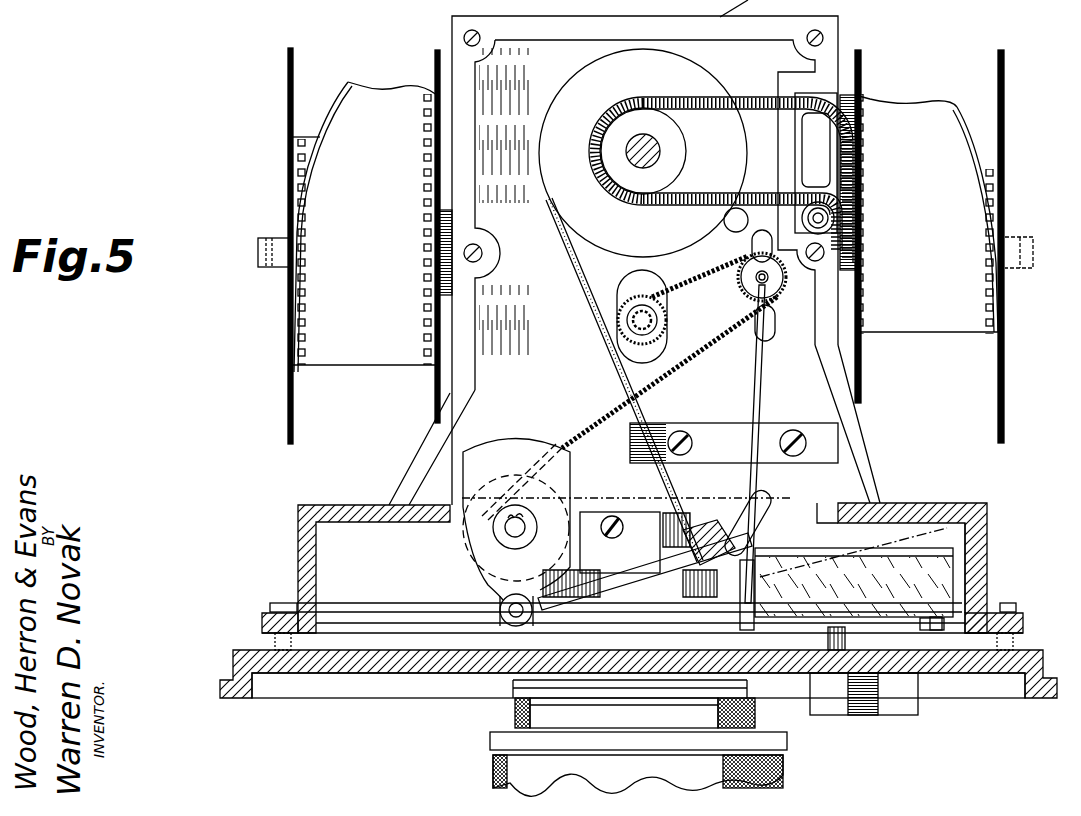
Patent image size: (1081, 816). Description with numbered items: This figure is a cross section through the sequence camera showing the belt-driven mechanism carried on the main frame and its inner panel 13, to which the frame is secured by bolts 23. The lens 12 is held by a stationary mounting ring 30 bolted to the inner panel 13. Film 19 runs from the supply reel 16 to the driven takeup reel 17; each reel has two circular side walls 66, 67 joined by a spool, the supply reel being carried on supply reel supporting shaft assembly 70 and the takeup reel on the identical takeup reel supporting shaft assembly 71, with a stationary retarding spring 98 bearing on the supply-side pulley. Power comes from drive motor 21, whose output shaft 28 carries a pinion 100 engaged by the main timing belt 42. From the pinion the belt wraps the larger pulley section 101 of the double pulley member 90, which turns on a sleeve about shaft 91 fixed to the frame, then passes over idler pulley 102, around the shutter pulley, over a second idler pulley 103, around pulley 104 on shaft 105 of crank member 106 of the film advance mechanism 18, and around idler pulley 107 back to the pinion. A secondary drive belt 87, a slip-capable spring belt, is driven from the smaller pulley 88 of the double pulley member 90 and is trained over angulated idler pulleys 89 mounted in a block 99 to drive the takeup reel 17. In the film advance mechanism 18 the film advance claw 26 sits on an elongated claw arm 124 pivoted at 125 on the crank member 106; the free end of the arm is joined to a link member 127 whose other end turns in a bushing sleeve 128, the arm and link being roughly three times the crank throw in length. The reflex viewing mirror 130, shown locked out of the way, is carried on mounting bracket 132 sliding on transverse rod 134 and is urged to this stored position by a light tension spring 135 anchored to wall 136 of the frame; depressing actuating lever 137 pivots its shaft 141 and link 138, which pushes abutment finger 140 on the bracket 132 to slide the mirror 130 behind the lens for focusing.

The lens 12 is at (493, 771).
The inner panel 13 is at (370, 700).
The supply reel 16 is at (280, 382).
The takeup reel 17 is at (1006, 361).
The film advance mechanism 18 is at (475, 581).
The film 19 is at (389, 92).
The drive motor 21 is at (640, 270).
The bolts 23 is at (280, 640).
The film advance claw 26 is at (738, 545).
The output shaft 28 is at (652, 334).
The mounting ring 30 is at (612, 690).
The main timing belt 42 is at (644, 416).
The side wall 66 is at (438, 50).
The side wall 67 is at (294, 60).
The supply reel supporting shaft assembly 70 is at (266, 272).
The takeup reel supporting shaft assembly 71 is at (1038, 254).
The secondary drive belt 87 is at (748, 97).
The smaller pulley 88 is at (688, 143).
The idler pulleys 89 is at (814, 118).
The double pulley member 90 is at (574, 90).
The shaft 91 is at (644, 143).
The retarding spring 98 is at (455, 223).
The block 99 is at (858, 151).
The pinion 100 is at (662, 316).
The larger pulley section 101 is at (643, 205).
The idler pulley 102 is at (738, 516).
The second idler pulley 103 is at (605, 578).
The pulley 104 is at (574, 478).
The shaft 105 is at (526, 527).
The crank member 106 is at (517, 446).
The idler pulley 107 is at (778, 293).
The claw arm 124 is at (645, 555).
The pivotal engagement 125 is at (500, 603).
The link member 127 is at (760, 392).
The bushing sleeve 128 is at (757, 284).
The reflex viewing mirror 130 is at (957, 576).
The mounting bracket 132 is at (958, 551).
The transverse rod 134 is at (1018, 606).
The tension spring 135 is at (925, 520).
The wall 136 is at (987, 513).
The actuating lever 137 is at (830, 718).
The link 138 is at (913, 626).
The abutment finger 140 is at (944, 630).
The shaft 141 is at (846, 648).